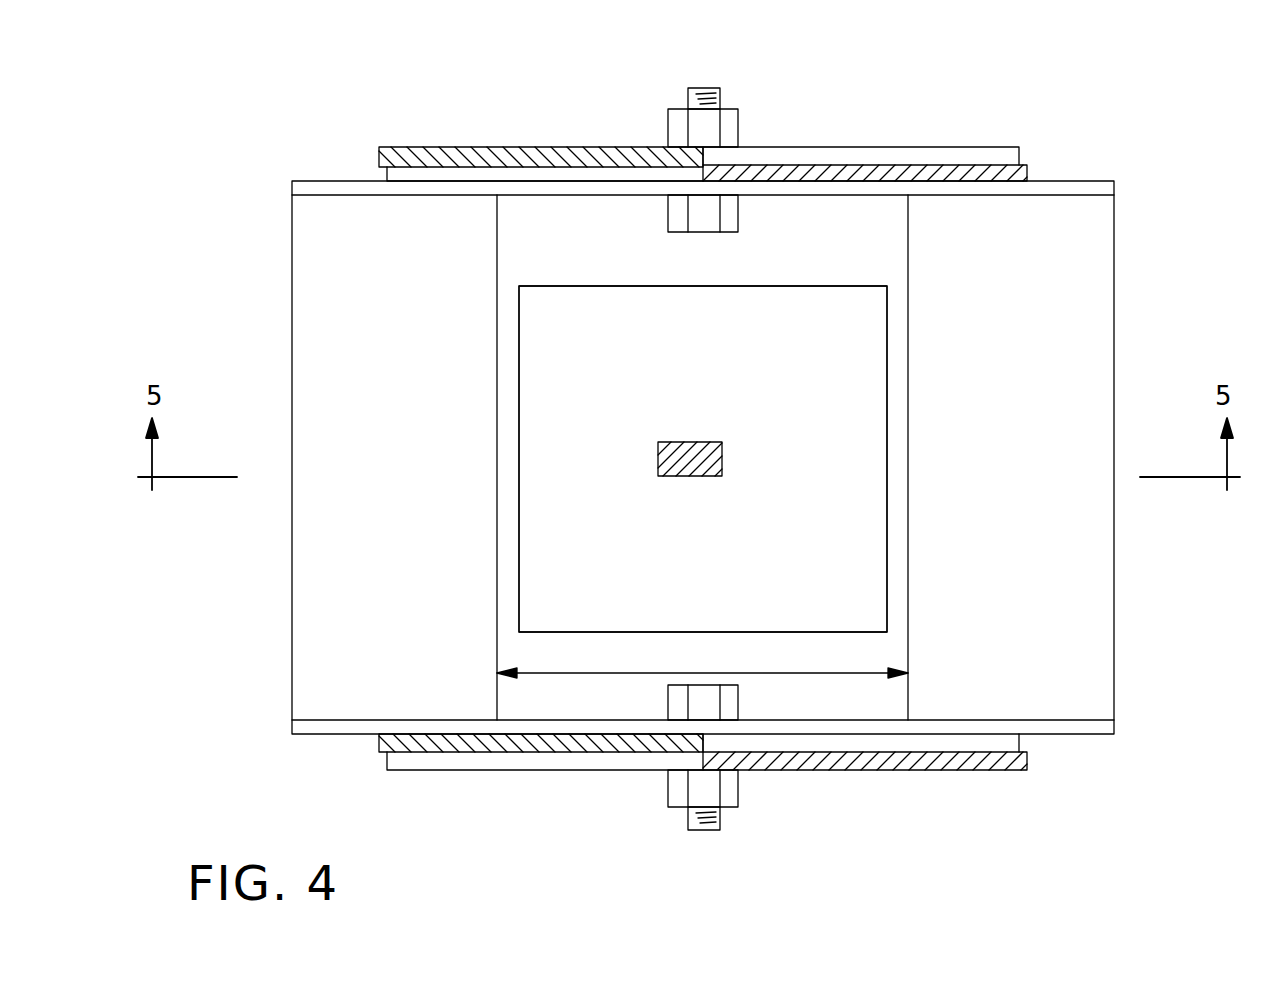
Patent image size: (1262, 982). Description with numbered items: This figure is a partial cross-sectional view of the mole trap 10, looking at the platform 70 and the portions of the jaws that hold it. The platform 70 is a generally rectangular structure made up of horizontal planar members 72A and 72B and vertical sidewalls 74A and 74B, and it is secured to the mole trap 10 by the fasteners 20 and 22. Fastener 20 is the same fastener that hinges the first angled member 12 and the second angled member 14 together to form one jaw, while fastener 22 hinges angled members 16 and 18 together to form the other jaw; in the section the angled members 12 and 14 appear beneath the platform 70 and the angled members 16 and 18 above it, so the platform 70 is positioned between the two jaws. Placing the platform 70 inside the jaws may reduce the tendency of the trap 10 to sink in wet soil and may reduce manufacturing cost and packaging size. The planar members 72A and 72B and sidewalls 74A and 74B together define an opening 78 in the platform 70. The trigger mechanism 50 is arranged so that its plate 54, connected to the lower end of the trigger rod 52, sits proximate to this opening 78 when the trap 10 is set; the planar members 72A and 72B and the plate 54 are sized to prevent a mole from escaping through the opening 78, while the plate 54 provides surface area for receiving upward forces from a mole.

The mole trap 10 is at (295, 105).
The first angled member 12 is at (497, 752).
The second angled member 14 is at (855, 768).
The angled member 16 is at (553, 147).
The angled member 18 is at (867, 165).
The fastener 20 is at (697, 830).
The fastener 22 is at (705, 88).
The trigger mechanism 50 is at (622, 280).
The trigger rod 52 is at (695, 442).
The plate 54 is at (729, 553).
The platform 70 is at (1090, 162).
The horizontal planar member 72A is at (1020, 416).
The horizontal planar member 72B is at (453, 416).
The vertical sidewall 74A is at (1060, 720).
The vertical sidewall 74B is at (1017, 196).
The opening 78 is at (560, 672).